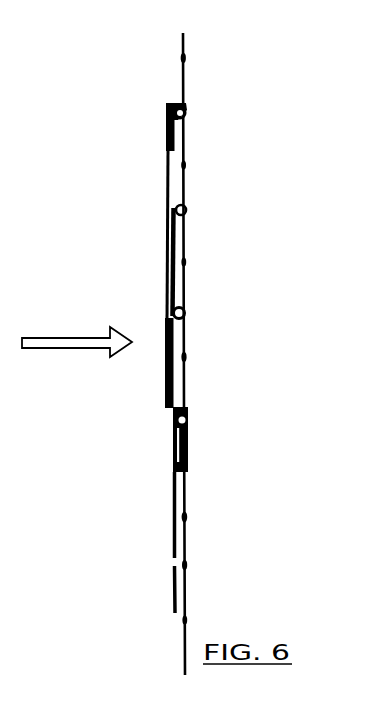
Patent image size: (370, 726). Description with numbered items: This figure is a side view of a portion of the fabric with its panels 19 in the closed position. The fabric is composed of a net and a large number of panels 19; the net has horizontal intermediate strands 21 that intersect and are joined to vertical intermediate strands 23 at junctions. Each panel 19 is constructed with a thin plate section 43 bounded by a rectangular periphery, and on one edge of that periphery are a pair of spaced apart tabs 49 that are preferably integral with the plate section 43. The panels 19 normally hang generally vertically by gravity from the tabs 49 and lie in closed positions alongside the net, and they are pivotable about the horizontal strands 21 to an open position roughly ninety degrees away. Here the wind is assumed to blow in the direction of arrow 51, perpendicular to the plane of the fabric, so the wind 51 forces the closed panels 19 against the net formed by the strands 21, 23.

The panel 19 is at (160, 169).
The horizontal intermediate strand 21 is at (186, 312).
The vertical intermediate strand 23 is at (185, 191).
The plate section 43 is at (168, 204).
The tab 49 is at (188, 117).
The wind direction arrow 51 is at (70, 337).